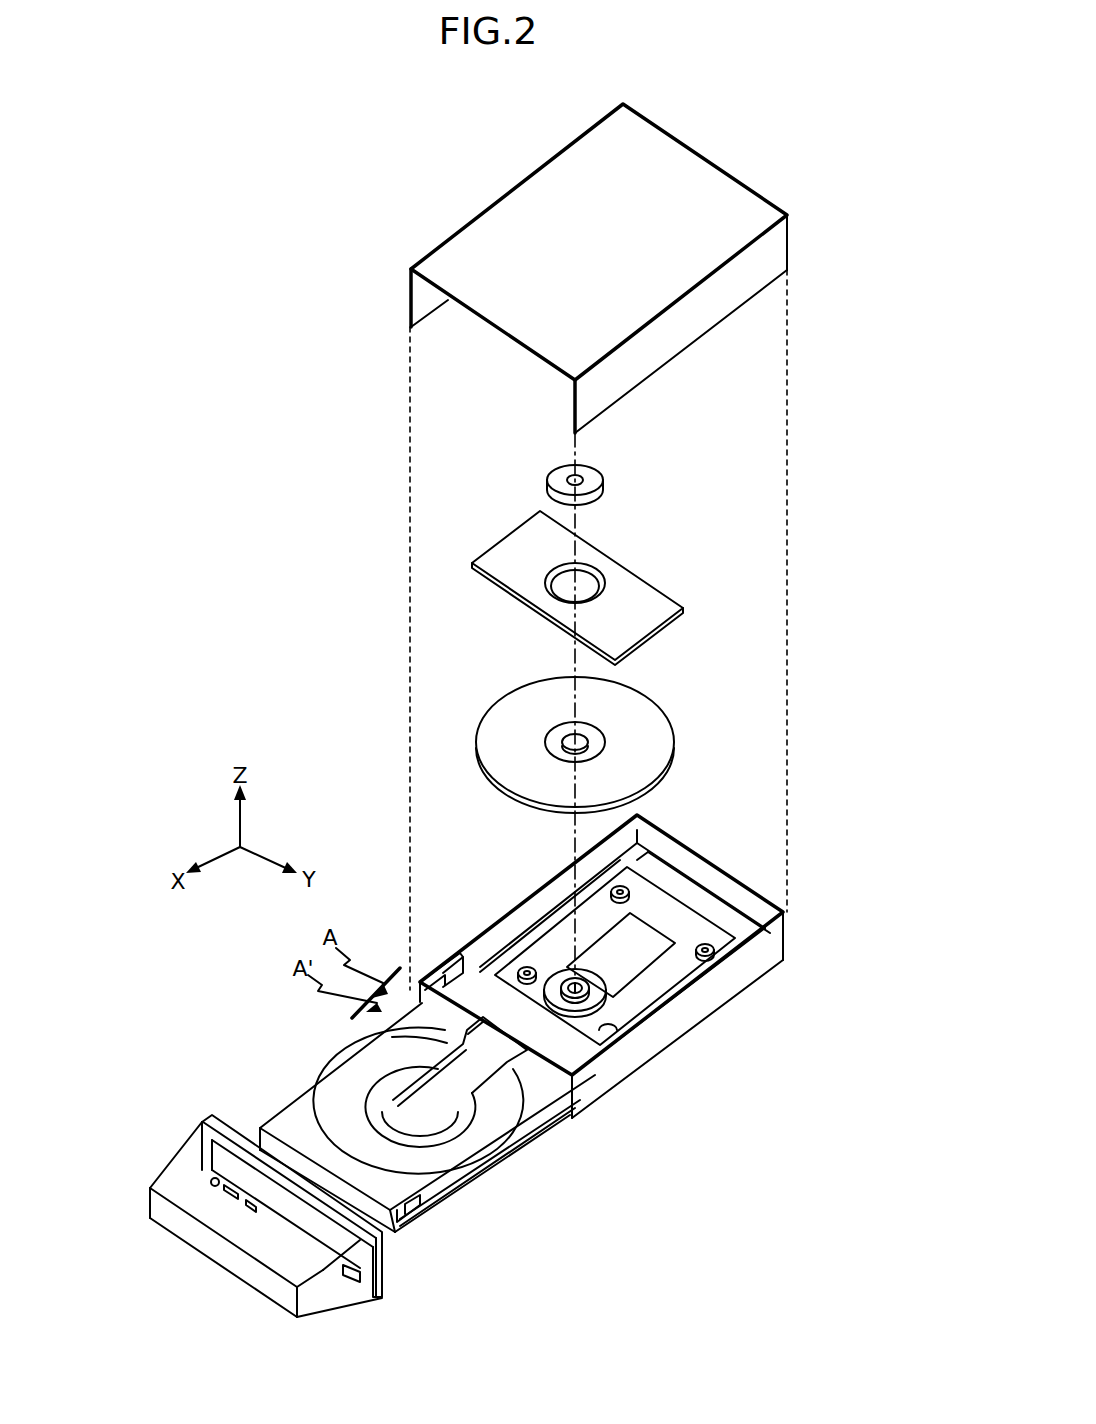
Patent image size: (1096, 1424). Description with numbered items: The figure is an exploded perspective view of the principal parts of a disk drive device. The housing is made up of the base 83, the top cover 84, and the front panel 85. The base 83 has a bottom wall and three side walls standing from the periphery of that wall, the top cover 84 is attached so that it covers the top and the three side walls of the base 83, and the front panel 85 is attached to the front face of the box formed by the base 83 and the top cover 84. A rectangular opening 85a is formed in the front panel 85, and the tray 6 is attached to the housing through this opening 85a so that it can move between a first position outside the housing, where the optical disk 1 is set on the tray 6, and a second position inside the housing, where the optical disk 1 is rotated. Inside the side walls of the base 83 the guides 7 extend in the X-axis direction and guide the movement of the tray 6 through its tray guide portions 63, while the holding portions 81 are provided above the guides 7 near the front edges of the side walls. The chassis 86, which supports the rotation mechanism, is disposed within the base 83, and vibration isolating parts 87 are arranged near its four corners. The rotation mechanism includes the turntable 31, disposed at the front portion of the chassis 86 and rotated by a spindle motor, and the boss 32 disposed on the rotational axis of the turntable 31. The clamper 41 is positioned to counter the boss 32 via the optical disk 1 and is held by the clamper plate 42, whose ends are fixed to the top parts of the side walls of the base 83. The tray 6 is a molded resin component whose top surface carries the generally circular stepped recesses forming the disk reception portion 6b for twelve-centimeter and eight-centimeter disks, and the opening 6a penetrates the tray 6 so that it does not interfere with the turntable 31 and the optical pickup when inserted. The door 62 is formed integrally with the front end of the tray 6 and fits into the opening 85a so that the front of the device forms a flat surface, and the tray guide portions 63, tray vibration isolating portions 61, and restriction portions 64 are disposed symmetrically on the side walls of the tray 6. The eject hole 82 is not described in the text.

The top cover 84 is at (458, 240).
The clamper 41 is at (600, 478).
The clamper plate 42 is at (663, 612).
The optical disk 1 is at (672, 730).
The vibration isolating parts 87 is at (633, 880).
The chassis 86 is at (710, 893).
The guides 7 is at (547, 913).
The turntable 31 is at (553, 988).
The boss 32 is at (587, 987).
The base 83 is at (610, 1077).
The restriction portions 64 is at (470, 957).
The holding portions 81 is at (440, 957).
The tray 6 is at (313, 1090).
The opening 6a is at (452, 1108).
The disk reception portion 6b is at (377, 1052).
The tray guide portions 63 is at (543, 1125).
The tray vibration isolating portions 61 is at (423, 1215).
The front panel 85 is at (387, 1277).
The opening 85a is at (330, 1230).
The emergency eject hole 82 is at (348, 1278).
The door 62 is at (267, 1300).